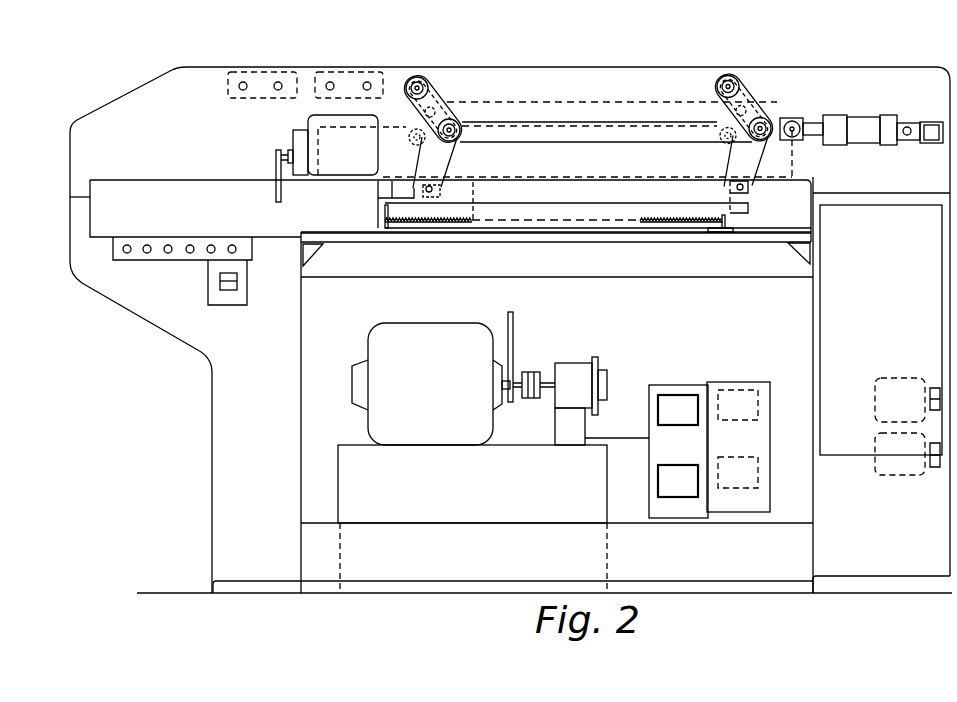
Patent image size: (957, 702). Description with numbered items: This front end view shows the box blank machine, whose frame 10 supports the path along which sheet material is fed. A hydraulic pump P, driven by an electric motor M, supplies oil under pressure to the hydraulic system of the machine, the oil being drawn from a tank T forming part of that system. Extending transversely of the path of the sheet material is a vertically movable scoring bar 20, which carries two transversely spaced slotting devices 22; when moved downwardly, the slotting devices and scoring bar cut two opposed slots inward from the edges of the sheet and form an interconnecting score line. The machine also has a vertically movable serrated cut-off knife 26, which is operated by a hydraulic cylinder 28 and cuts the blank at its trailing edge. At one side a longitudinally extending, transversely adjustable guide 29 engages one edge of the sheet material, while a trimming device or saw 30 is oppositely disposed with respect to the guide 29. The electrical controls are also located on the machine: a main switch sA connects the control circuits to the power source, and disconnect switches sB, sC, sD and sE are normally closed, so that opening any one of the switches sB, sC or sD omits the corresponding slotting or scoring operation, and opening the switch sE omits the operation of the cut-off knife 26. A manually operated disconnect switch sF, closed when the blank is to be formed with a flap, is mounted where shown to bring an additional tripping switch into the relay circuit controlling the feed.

The frame 10 is at (206, 462).
The scoring bar 20 is at (383, 192).
The slotting devices 22 is at (418, 224).
The serrated cut-off knife 26 is at (748, 212).
The hydraulic cylinder 28 is at (866, 120).
The guide 29 is at (737, 234).
The saw 30 is at (388, 211).
The electric motor M is at (453, 378).
The hydraulic pump P is at (603, 363).
The tank T is at (472, 484).
The main switch sA is at (125, 244).
The disconnect switch sB is at (147, 244).
The disconnect switch sC is at (169, 244).
The disconnect switch sD is at (191, 244).
The disconnect switch sE is at (208, 254).
The manually operated disconnect switch sF is at (247, 228).